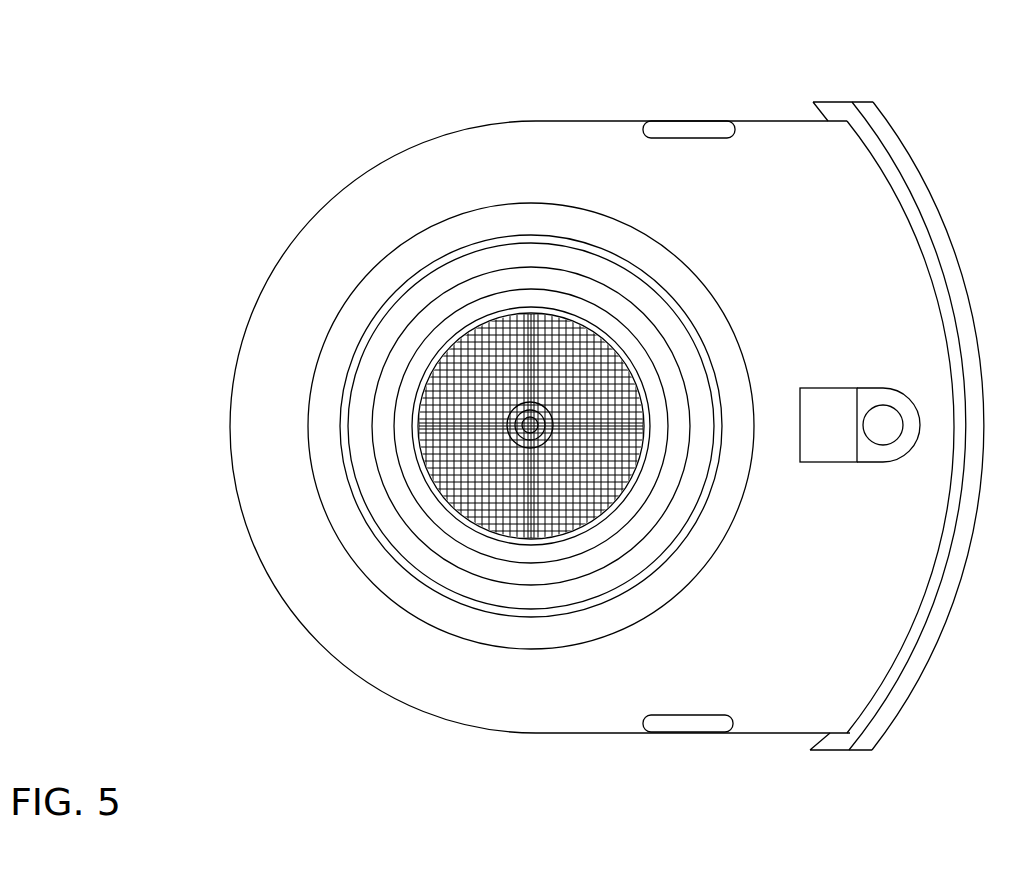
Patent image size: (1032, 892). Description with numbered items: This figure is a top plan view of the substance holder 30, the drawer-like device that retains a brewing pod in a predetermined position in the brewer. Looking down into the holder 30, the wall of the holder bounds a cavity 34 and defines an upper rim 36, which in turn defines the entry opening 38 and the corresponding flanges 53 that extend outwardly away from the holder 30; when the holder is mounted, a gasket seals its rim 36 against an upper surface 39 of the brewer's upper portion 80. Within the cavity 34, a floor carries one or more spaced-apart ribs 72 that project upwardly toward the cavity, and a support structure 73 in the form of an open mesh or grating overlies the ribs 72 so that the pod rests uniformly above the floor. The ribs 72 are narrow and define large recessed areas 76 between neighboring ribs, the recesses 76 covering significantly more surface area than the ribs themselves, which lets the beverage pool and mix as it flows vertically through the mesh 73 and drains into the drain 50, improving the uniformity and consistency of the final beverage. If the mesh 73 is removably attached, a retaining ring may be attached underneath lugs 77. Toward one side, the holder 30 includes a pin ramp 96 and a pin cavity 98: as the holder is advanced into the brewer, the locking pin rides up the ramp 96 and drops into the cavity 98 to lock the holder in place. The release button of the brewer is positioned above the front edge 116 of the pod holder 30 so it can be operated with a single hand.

The substance holder 30 is at (652, 66).
The cavity 34 is at (548, 573).
The upper rim 36 is at (718, 431).
The entry opening 38 is at (727, 540).
The upper surface 39 is at (400, 218).
The drain 50 is at (597, 472).
The flanges 53 is at (556, 118).
The ribs 72 is at (529, 353).
The support structure 73 is at (503, 507).
The recessed areas 76 is at (593, 358).
The lugs 77 is at (640, 462).
The housing outer wall 80 is at (230, 430).
The pin ramp 96 is at (831, 410).
The pin cavity 98 is at (882, 423).
The front edge 116 is at (905, 150).